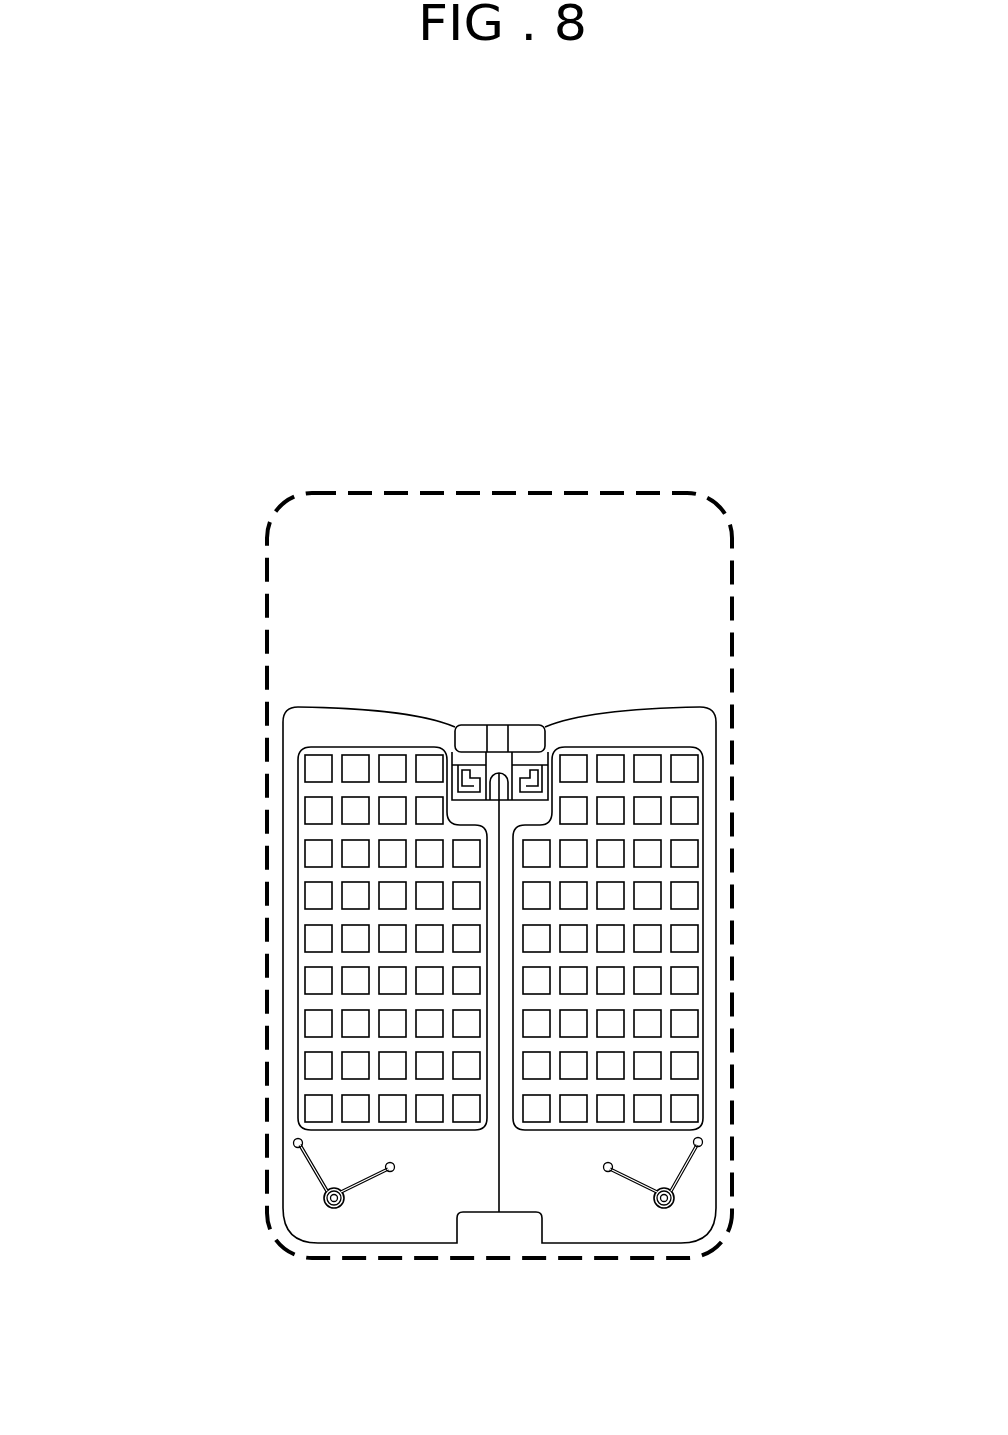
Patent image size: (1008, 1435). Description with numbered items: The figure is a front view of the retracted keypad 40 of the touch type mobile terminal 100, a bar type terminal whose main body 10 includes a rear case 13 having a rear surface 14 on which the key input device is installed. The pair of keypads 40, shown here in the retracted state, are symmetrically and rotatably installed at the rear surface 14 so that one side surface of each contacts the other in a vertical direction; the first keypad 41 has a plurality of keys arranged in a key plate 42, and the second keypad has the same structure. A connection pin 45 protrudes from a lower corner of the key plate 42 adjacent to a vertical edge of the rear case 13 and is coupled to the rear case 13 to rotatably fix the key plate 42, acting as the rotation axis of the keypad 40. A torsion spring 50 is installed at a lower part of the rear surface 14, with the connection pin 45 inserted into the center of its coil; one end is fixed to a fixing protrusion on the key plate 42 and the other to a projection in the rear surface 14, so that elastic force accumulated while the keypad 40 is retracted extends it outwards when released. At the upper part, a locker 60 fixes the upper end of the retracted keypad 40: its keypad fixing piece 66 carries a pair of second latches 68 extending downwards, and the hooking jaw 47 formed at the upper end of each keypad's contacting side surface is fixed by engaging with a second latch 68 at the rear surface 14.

The touch type mobile terminal 100 is at (161, 376).
The main body 10 is at (620, 490).
The rear case 13 is at (344, 509).
The rear surface 14 is at (697, 572).
The keypad 40 is at (305, 700).
The first keypad 41 is at (284, 767).
The key plate 42 is at (718, 800).
The locker 60 is at (477, 722).
The keypad fixing piece 66 is at (497, 740).
The hooking jaw 47 is at (537, 733).
The second latch 68 is at (468, 793).
The torsion spring 50 is at (366, 1192).
The connection pin 45 is at (668, 1206).